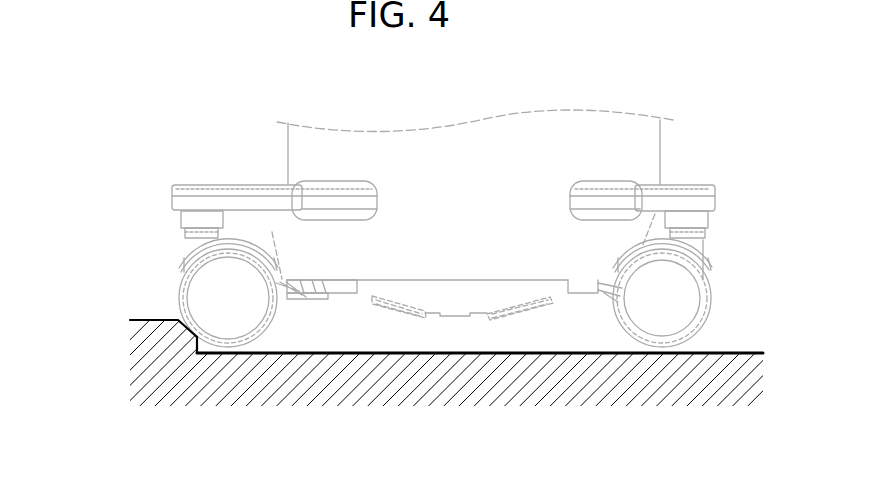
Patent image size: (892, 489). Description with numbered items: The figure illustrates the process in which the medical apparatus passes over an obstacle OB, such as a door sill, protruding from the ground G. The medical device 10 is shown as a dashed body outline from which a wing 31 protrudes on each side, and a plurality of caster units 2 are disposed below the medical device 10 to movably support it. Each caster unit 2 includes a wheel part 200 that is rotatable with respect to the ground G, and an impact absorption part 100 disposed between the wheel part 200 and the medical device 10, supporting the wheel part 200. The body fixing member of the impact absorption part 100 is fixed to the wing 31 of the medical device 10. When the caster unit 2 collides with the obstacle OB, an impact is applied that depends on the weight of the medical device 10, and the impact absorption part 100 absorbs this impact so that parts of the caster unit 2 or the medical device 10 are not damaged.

The medical device 10 is at (558, 99).
The caster unit 2 is at (157, 194).
The wing 31 is at (253, 197).
The impact absorption part 100 is at (168, 218).
The wheel part 200 is at (230, 329).
The obstacle OB is at (158, 338).
The ground G is at (435, 443).